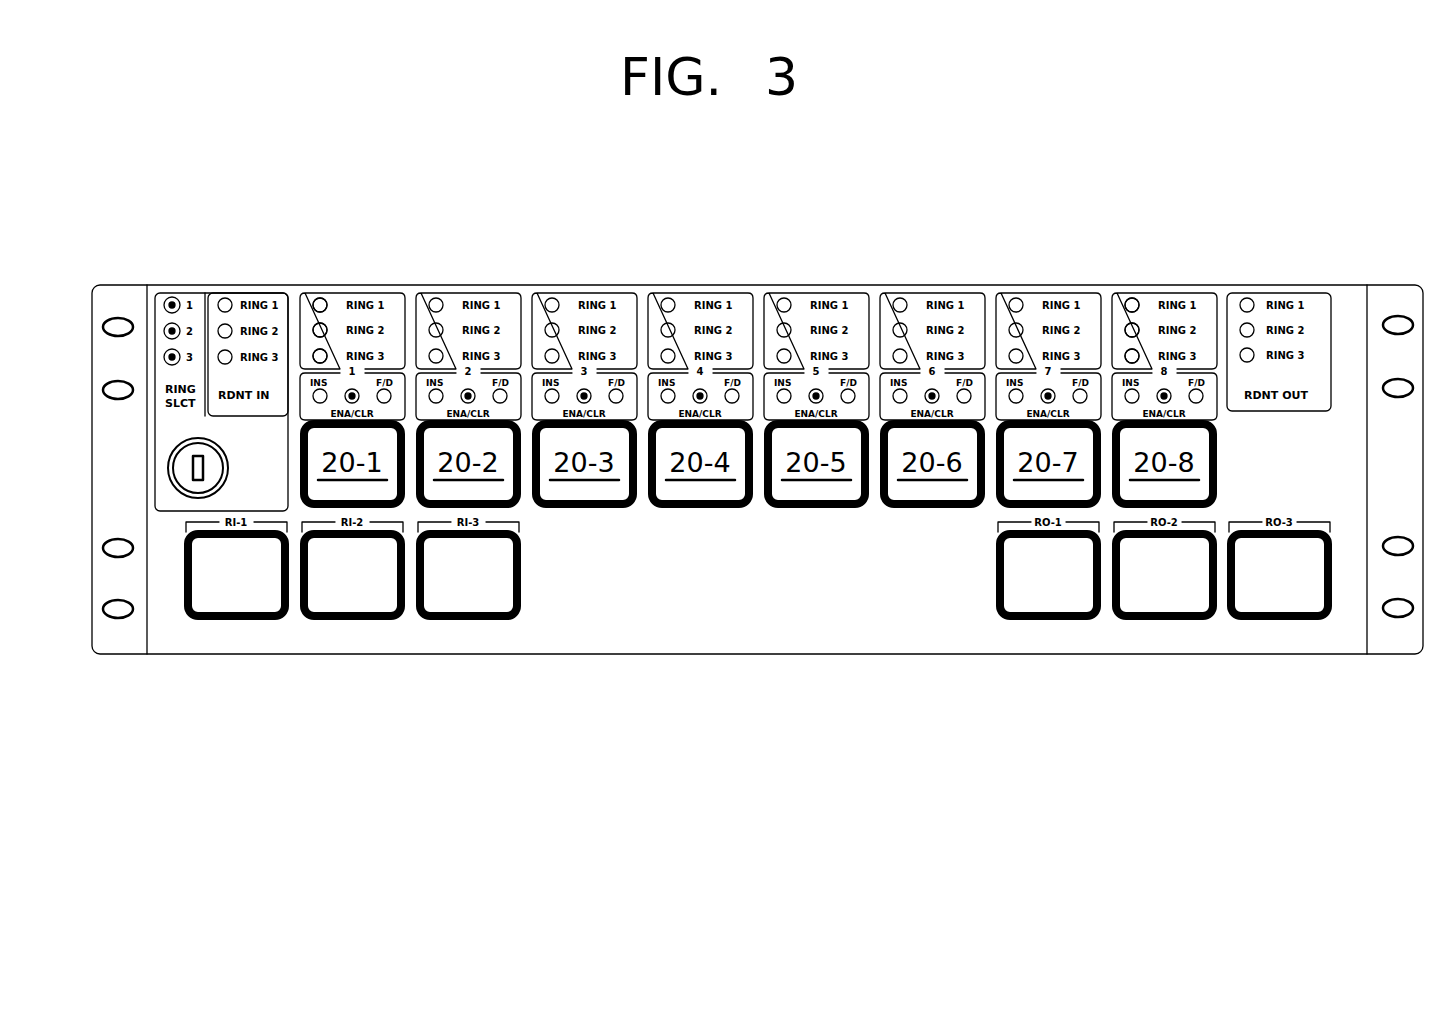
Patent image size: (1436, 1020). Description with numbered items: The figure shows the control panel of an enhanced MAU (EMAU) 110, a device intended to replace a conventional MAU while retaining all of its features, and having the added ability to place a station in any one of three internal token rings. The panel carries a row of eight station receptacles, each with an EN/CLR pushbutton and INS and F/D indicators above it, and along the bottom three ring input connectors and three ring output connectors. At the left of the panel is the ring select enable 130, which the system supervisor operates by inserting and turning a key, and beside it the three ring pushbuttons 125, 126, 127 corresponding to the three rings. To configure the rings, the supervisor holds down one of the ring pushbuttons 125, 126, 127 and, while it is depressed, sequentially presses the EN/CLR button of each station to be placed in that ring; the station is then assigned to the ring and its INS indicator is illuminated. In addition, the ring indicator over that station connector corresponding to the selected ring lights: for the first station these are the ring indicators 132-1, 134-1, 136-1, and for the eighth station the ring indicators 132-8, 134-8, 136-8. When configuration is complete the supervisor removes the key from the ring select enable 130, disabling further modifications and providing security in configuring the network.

The enhanced MAU (EMAU) 110 is at (748, 655).
The ring pushbutton 125 is at (172, 297).
The ring pushbutton 126 is at (172, 323).
The ring pushbutton 127 is at (178, 352).
The ring select enable 130 is at (182, 470).
The ring indicator 132-1 is at (320, 298).
The ring indicator 134-1 is at (322, 323).
The ring indicator 136-1 is at (326, 351).
The ring indicator 132-8 is at (1132, 298).
The ring indicator 134-8 is at (1134, 323).
The ring indicator 136-8 is at (1138, 350).